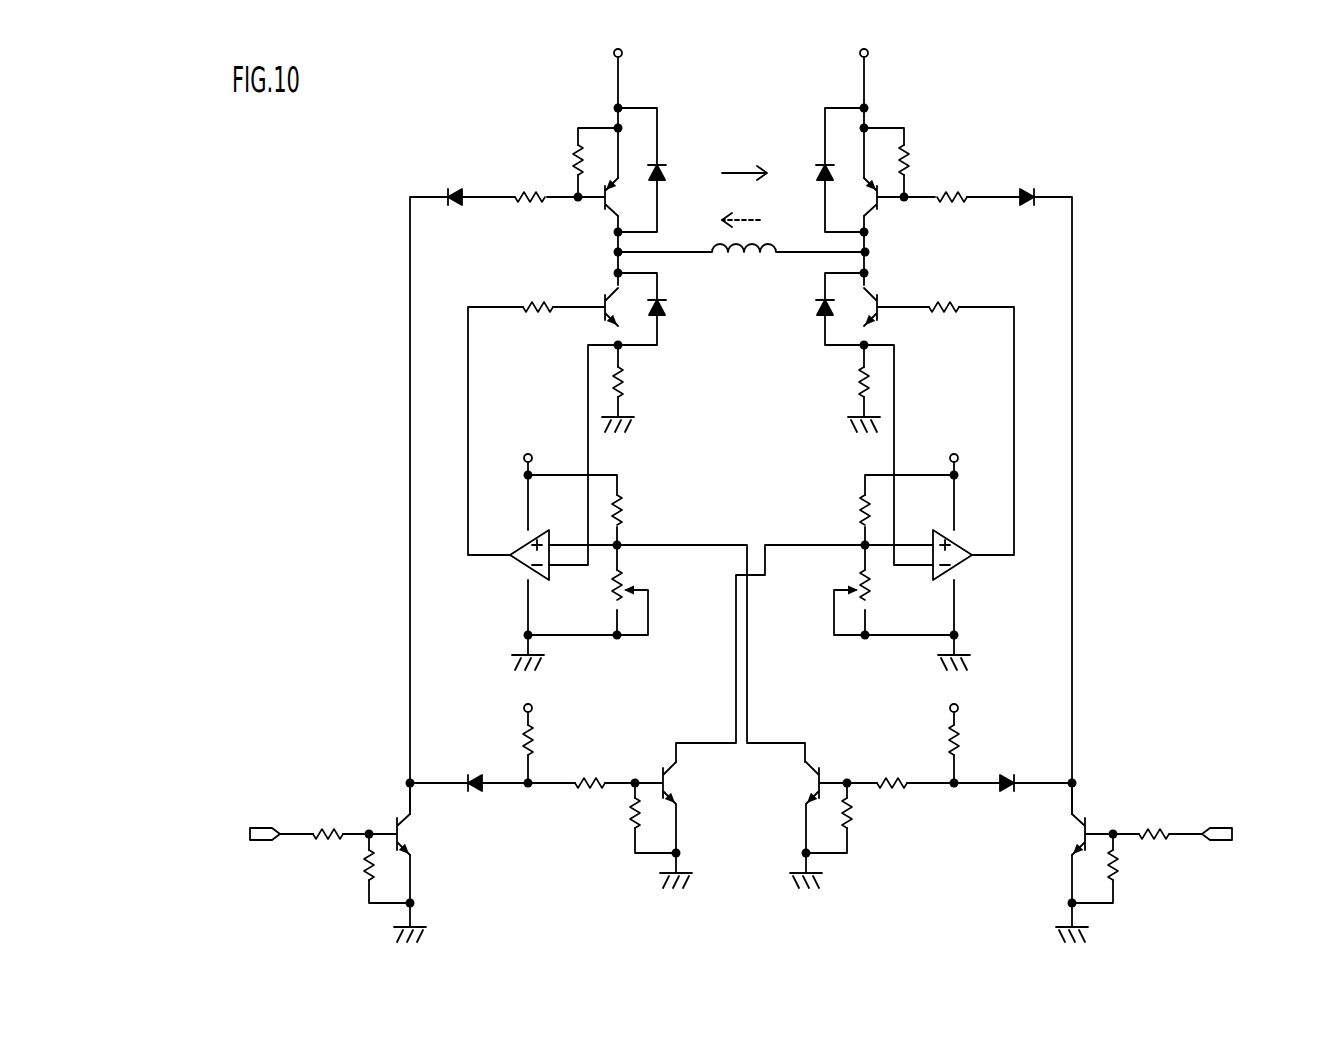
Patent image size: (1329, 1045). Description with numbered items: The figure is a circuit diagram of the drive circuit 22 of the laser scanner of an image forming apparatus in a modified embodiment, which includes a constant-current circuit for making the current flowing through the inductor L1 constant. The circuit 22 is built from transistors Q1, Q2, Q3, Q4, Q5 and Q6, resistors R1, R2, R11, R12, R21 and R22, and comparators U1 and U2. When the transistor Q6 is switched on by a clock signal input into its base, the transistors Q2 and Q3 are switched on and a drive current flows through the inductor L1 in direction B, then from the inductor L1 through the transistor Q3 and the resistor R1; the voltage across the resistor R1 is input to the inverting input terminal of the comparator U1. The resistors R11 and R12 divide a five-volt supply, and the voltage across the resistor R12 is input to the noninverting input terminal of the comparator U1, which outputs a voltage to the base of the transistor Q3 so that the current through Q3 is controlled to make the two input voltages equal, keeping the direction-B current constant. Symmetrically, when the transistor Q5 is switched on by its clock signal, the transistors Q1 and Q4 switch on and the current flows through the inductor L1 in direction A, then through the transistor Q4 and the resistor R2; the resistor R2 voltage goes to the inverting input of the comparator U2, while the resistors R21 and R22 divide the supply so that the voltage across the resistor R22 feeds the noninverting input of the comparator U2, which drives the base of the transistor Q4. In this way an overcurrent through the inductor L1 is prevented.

The drive circuit 22 is at (1137, 121).
The transistor Q1 is at (598, 170).
The transistor Q2 is at (885, 170).
The transistor Q3 is at (571, 290).
The transistor Q4 is at (910, 290).
The transistor Q5 is at (346, 861).
The transistor Q6 is at (1135, 861).
The inductor L1 is at (742, 276).
The resistor R1 is at (629, 388).
The resistor R2 is at (852, 388).
The resistor R11 is at (597, 512).
The resistor R21 is at (884, 512).
The resistor R12 is at (588, 592).
The resistor R22 is at (894, 592).
The comparator U1 is at (522, 562).
The comparator U2 is at (963, 562).